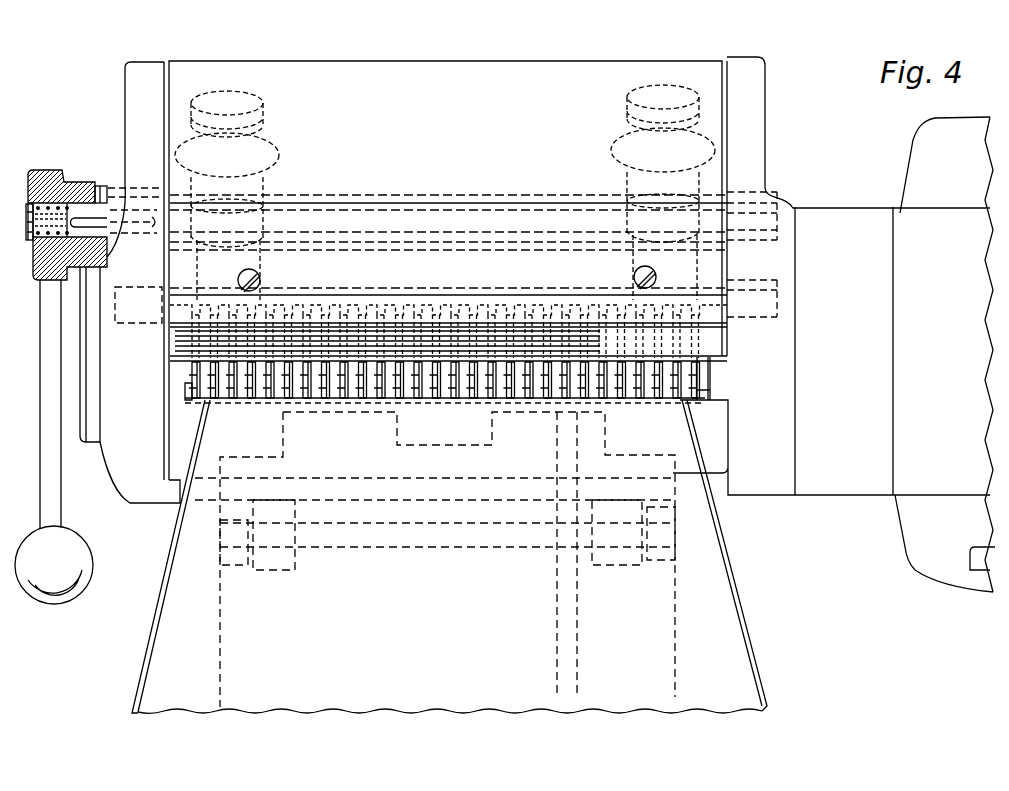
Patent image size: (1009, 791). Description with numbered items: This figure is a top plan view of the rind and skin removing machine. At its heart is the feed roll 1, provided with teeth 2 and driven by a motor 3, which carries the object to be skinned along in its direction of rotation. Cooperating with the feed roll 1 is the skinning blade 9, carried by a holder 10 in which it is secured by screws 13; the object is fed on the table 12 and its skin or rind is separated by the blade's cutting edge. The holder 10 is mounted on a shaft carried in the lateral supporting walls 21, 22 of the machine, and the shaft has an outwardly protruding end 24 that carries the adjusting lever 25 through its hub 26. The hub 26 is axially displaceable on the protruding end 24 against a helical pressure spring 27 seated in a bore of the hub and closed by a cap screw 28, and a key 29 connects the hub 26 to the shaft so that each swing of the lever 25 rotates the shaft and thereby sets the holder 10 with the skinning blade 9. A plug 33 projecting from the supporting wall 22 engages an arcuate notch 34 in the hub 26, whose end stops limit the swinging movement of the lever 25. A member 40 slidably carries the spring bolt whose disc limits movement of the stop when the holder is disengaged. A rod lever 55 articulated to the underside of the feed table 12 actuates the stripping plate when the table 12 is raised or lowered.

The feed roll 1 is at (186, 403).
The teeth 2 is at (227, 402).
The motor 3 is at (917, 143).
The skinning blade 9 is at (180, 362).
The holder 10 is at (713, 110).
The table 12 is at (173, 605).
The screws 13 is at (261, 280).
The lateral supporting wall 21 is at (750, 152).
The lateral supporting wall 22 is at (137, 82).
The protruding end 24 is at (73, 216).
The adjusting lever 25 is at (46, 428).
The hub 26 is at (47, 172).
The helical pressure spring 27 is at (38, 176).
The cap screw 28 is at (28, 236).
The key 29 is at (47, 268).
The plug 33 is at (125, 185).
The arcuate notch 34 is at (95, 186).
The member 40 is at (263, 122).
The rod lever 55 is at (556, 620).